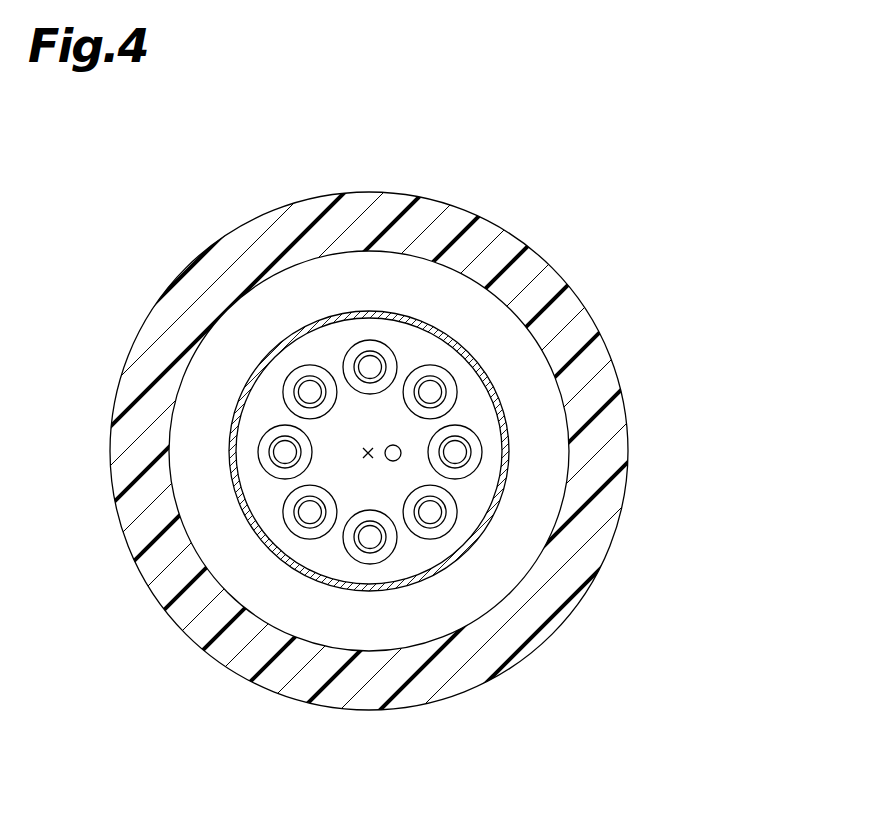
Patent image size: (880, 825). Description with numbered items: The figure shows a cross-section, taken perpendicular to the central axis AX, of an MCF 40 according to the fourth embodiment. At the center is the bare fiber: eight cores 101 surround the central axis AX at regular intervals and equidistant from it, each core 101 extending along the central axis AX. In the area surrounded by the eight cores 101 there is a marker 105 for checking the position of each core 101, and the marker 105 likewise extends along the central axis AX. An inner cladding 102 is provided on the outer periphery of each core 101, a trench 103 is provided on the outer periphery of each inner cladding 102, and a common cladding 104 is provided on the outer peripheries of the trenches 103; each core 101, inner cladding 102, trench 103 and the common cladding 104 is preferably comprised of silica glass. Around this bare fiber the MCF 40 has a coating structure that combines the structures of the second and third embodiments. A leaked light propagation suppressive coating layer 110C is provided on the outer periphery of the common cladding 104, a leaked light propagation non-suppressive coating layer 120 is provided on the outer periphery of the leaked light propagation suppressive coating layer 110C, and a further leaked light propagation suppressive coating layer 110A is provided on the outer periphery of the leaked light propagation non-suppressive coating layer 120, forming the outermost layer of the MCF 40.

The MCF 40 is at (650, 325).
The leaked light propagation suppressive coating layer 110A is at (593, 518).
The leaked light propagation non-suppressive coating layer 120 is at (535, 476).
The leaked light propagation suppressive coating layer 110C is at (510, 435).
The common cladding 104 is at (450, 358).
The trench 103 is at (398, 372).
The inner cladding 102 is at (390, 367).
The core 101 is at (372, 363).
The marker 105 is at (393, 462).
The central axis AX is at (370, 446).